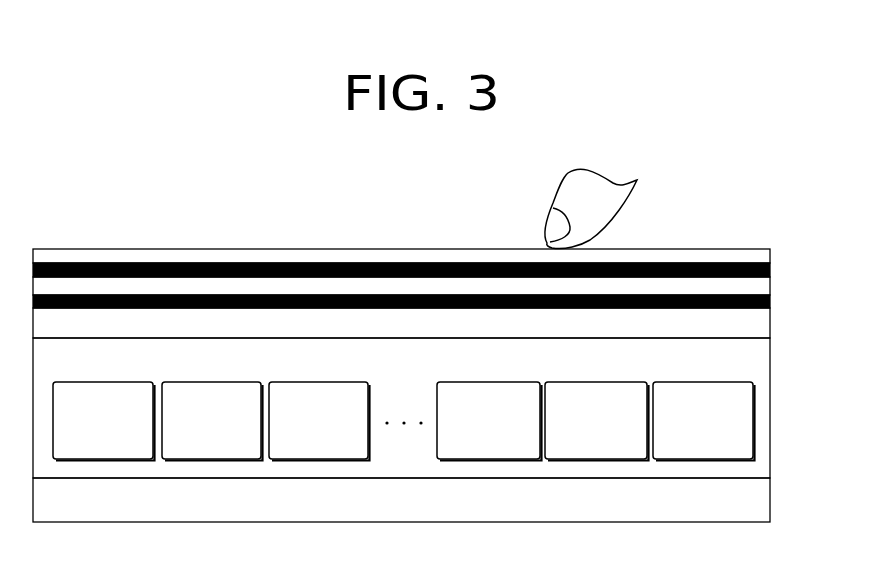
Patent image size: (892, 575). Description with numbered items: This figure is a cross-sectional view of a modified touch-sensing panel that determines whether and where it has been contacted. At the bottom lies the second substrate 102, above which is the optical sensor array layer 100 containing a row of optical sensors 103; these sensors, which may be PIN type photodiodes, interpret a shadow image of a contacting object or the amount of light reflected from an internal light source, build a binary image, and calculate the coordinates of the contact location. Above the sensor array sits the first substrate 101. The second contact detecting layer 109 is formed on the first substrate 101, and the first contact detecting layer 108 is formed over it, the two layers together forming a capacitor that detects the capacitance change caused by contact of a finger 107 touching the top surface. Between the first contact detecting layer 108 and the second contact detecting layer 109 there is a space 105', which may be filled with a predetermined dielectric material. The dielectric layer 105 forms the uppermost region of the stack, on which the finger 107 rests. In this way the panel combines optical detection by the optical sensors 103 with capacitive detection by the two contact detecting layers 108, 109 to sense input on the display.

The optical sensor array layer 100 is at (435, 408).
The first substrate 101 is at (758, 328).
The second substrate 102 is at (757, 494).
The optical sensor 103 is at (698, 380).
The dielectric layer 105 is at (435, 237).
The space 105' is at (438, 279).
The finger 107 is at (613, 205).
The first contact detecting layer 108 is at (758, 268).
The second contact detecting layer 109 is at (760, 301).